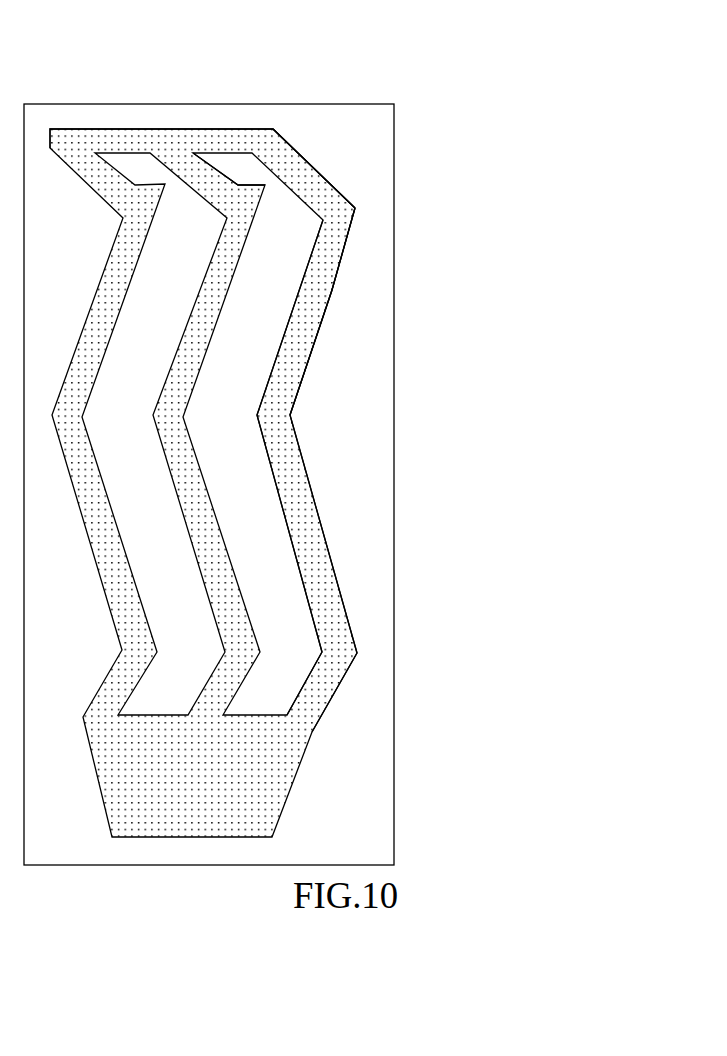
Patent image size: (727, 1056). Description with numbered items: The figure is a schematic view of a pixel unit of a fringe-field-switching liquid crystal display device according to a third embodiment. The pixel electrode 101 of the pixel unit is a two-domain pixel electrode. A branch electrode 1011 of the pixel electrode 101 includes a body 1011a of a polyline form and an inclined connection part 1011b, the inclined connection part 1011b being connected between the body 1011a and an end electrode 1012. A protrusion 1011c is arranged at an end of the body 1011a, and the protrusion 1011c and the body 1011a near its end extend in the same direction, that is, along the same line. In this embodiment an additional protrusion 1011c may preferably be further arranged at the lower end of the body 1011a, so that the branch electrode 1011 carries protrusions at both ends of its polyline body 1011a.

The pixel electrode 101 is at (134, 129).
The end electrode 1012 is at (225, 128).
The branch electrode 1011 is at (585, 122).
The body 1011a is at (337, 275).
The inclined connection part 1011b is at (333, 188).
The protrusion 1011c is at (240, 186).